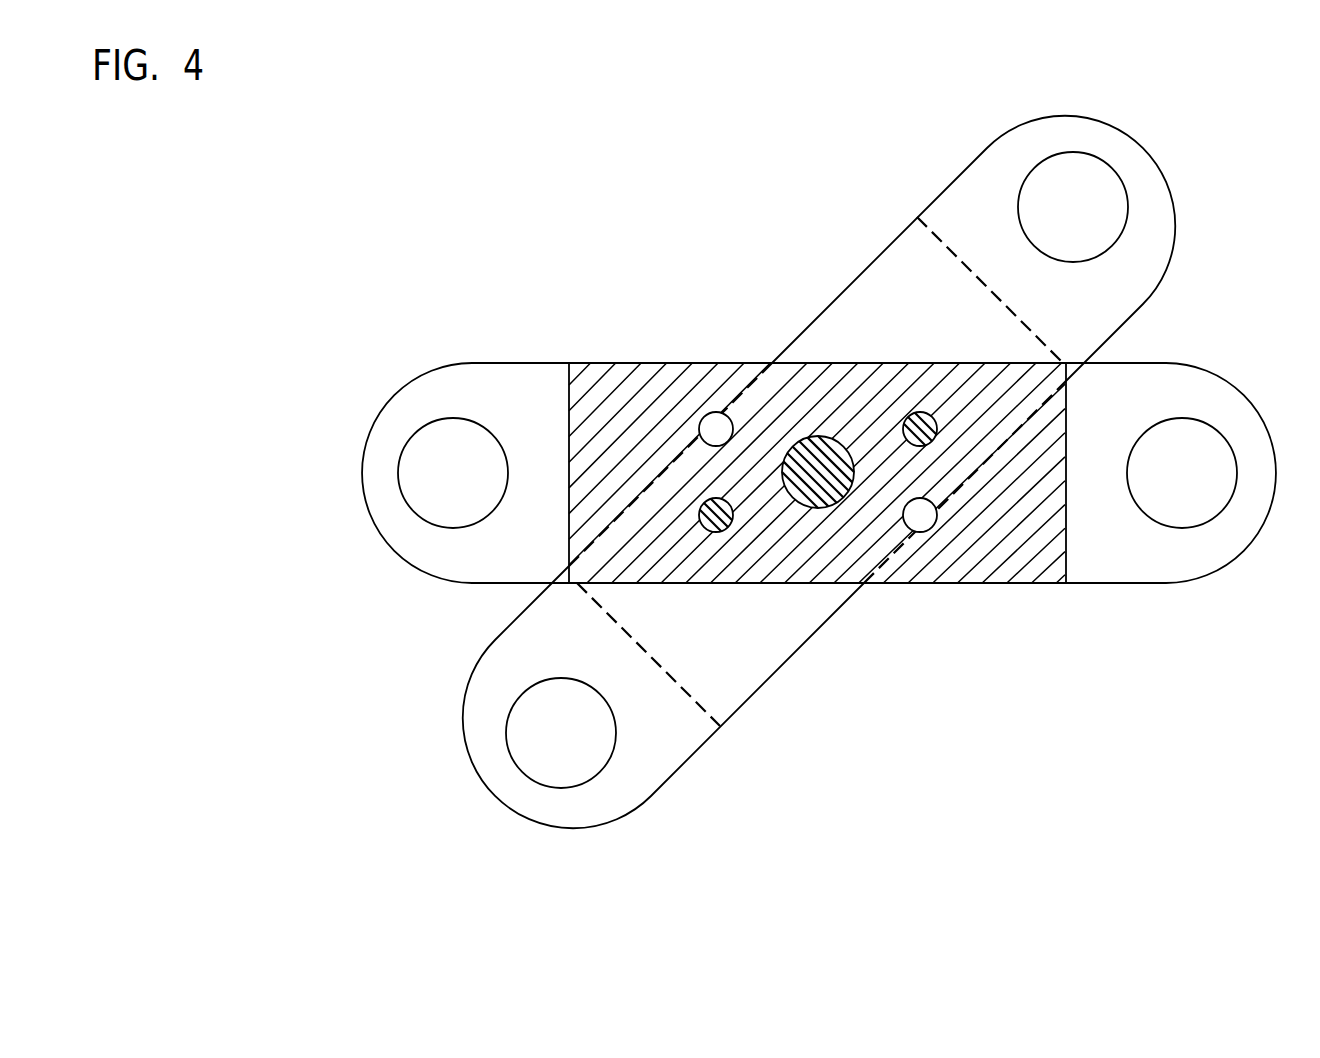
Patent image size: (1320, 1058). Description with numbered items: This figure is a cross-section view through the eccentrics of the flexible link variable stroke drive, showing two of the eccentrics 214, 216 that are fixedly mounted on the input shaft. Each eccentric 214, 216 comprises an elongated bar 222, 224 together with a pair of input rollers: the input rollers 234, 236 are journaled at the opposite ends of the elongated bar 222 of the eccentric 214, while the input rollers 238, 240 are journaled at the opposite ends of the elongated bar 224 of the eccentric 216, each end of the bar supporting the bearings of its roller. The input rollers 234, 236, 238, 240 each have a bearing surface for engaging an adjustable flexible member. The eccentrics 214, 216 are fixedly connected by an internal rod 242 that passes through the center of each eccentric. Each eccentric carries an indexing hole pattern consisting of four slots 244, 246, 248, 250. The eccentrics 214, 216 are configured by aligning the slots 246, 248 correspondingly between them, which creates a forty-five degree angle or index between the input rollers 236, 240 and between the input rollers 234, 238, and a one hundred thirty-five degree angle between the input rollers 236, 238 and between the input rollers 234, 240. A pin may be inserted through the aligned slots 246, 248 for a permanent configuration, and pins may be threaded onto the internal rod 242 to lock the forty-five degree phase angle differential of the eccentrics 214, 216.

The eccentric 214 is at (537, 348).
The eccentric 216 is at (675, 820).
The elongated bar 222 is at (997, 542).
The elongated bar 224 is at (900, 268).
The input roller 234 is at (447, 490).
The input roller 236 is at (1188, 500).
The input roller 238 is at (538, 750).
The input roller 240 is at (1048, 192).
The internal rod 242 is at (817, 445).
The slot 244 is at (716, 432).
The slot 246 is at (932, 415).
The slot 248 is at (728, 512).
The slot 250 is at (917, 510).